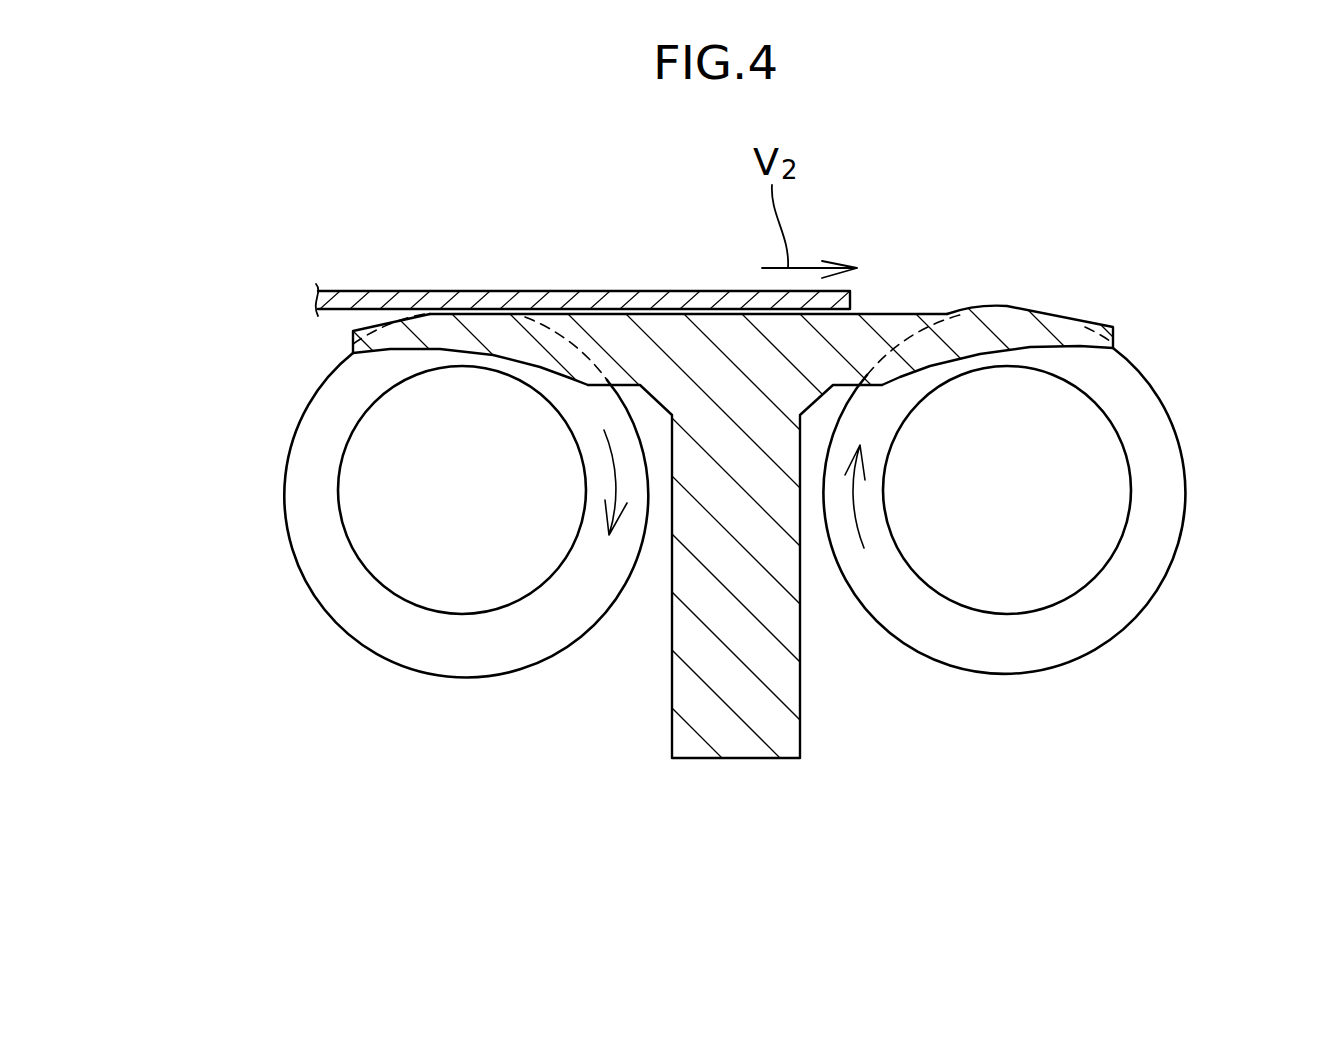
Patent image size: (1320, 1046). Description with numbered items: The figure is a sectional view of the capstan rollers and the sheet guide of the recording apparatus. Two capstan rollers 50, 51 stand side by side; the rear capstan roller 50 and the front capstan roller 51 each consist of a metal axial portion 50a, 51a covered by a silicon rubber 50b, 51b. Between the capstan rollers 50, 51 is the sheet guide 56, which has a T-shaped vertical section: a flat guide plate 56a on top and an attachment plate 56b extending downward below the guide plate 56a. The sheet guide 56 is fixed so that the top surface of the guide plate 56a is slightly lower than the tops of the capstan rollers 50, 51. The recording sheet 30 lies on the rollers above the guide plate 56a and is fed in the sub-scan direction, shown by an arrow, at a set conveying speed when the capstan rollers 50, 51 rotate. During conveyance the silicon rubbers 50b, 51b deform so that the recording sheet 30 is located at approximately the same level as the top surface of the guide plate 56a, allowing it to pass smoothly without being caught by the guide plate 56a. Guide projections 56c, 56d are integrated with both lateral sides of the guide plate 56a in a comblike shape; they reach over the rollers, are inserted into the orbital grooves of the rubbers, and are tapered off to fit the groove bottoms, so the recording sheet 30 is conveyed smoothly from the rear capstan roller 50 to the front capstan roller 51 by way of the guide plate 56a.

The recording sheet 30 is at (565, 288).
The capstan roller 50 is at (412, 586).
The metal axial portion 50a is at (522, 637).
The silicon rubber 50b is at (357, 491).
The capstan roller 51 is at (1054, 589).
The metal axial portion 51a is at (945, 633).
The silicon rubber 51b is at (1100, 488).
The sheet guide 56 is at (800, 523).
The guide plate 56a is at (900, 313).
The attachment plate 56b is at (722, 720).
The guide projection 56c is at (437, 337).
The guide projection 56d is at (1058, 332).